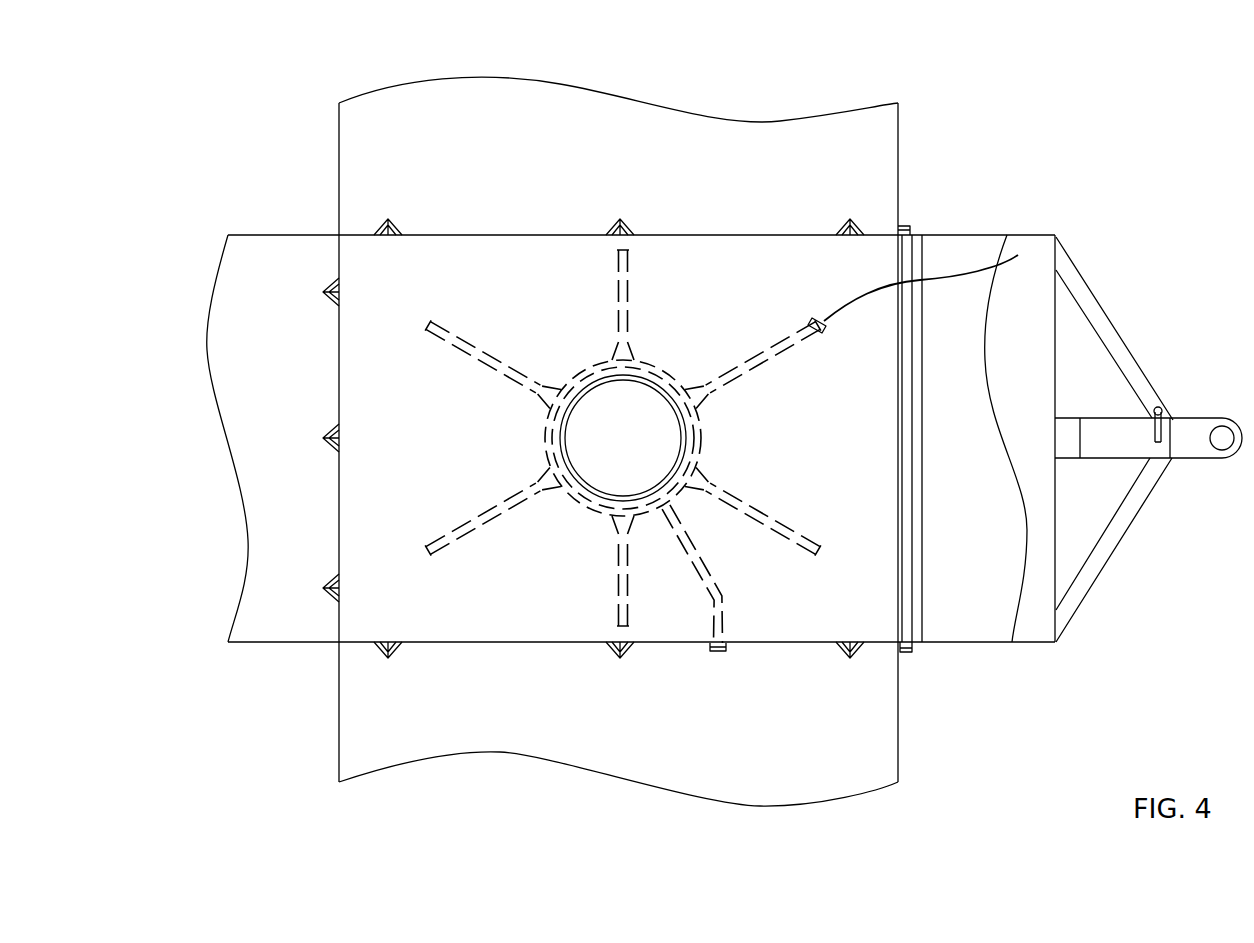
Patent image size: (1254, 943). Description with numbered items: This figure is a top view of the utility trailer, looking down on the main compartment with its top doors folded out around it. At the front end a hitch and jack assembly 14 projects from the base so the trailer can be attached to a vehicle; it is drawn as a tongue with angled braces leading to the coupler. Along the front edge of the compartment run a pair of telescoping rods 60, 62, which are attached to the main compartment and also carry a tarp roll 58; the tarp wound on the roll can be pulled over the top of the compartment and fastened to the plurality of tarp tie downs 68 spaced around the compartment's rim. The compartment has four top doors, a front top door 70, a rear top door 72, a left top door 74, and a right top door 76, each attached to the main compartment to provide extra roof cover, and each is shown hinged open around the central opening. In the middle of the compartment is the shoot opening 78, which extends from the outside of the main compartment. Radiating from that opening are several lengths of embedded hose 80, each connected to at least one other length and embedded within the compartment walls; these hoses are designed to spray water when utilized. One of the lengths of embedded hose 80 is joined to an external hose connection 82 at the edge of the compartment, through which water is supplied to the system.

The hitch and jack assembly 14 is at (1135, 356).
The tarp roll 58 is at (905, 237).
The telescoping rod 60 is at (903, 228).
The telescoping rod 62 is at (905, 655).
The tarp tie downs 68 is at (325, 290).
The front top door 70 is at (1012, 625).
The rear top door 72 is at (302, 645).
The left top door 74 is at (782, 120).
The right top door 76 is at (898, 742).
The shoot opening 78 is at (585, 392).
The embedded hose 80 is at (1018, 255).
The external hose connection 82 is at (720, 652).